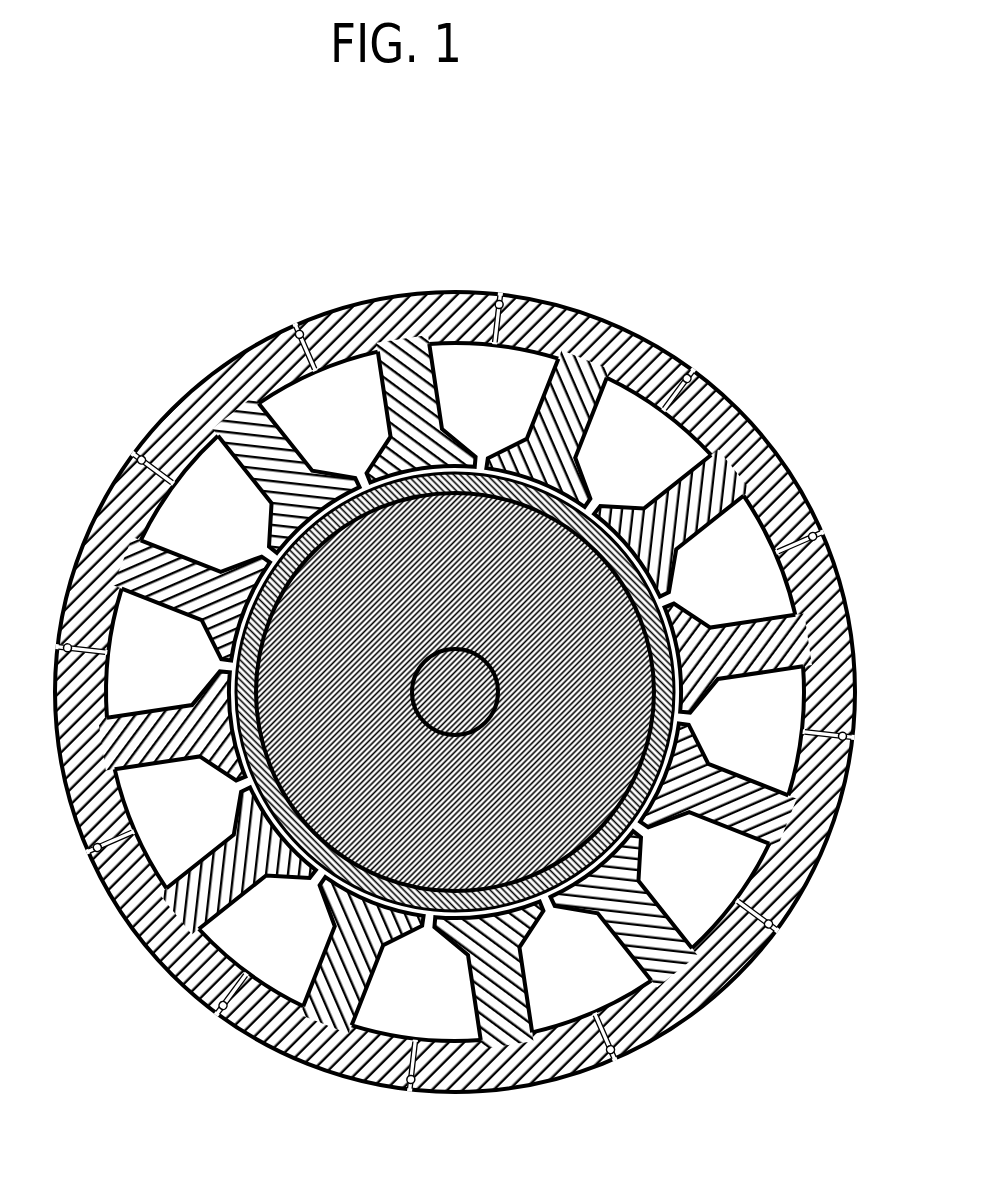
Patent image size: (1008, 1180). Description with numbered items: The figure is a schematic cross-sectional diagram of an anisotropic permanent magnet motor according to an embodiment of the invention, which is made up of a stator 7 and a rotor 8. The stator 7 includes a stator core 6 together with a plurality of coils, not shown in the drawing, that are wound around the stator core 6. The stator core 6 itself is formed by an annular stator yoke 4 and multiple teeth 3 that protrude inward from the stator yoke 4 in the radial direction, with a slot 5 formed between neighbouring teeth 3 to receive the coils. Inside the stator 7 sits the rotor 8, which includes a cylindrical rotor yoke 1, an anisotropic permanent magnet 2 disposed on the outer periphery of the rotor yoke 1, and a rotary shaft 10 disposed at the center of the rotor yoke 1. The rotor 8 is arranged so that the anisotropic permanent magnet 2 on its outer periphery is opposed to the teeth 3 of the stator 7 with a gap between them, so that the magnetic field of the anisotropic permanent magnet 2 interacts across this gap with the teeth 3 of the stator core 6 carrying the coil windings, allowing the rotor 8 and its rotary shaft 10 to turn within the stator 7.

The rotor yoke 1 is at (591, 692).
The anisotropic permanent magnet 2 is at (681, 456).
The teeth 3 is at (260, 417).
The stator yoke 4 is at (455, 692).
The slot 5 is at (133, 477).
The stator core 6 is at (441, 686).
The stator 7 is at (455, 692).
The rotor 8 is at (458, 577).
The rotary shaft 10 is at (562, 899).